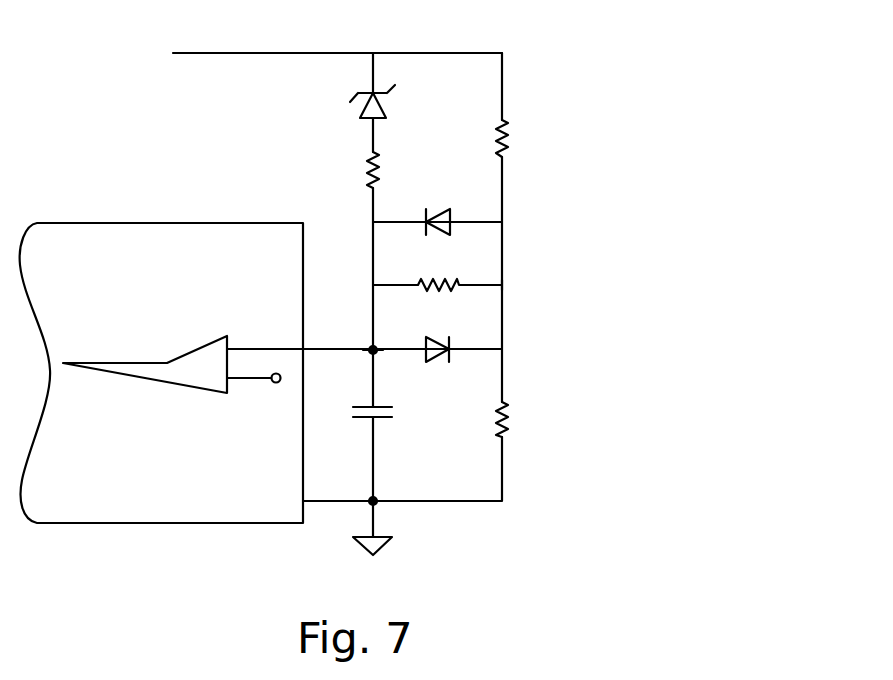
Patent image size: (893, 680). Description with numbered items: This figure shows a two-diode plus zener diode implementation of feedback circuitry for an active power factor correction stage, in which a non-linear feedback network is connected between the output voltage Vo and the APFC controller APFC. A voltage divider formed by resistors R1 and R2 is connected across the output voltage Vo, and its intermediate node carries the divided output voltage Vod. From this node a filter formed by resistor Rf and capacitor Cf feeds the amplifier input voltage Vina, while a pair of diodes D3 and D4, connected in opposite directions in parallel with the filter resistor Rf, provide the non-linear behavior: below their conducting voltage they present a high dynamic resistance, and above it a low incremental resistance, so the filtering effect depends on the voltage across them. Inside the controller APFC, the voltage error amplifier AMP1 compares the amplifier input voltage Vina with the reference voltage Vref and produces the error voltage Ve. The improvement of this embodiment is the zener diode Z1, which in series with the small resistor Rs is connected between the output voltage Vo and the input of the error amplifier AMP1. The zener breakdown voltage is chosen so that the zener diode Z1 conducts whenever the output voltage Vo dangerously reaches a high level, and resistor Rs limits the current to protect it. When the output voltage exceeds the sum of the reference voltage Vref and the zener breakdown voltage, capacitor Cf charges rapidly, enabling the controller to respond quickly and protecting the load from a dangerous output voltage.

The output voltage Vo is at (486, 32).
The zener diode Z1 is at (355, 108).
The resistor Rs is at (353, 172).
The voltage divider resistor R1 is at (480, 141).
The voltage divider resistor R2 is at (480, 420).
The diode D3 is at (437, 203).
The filter resistor Rf is at (437, 266).
The divided output voltage Vod is at (525, 289).
The diode D4 is at (364, 333).
The amplifier input voltage Vina is at (348, 328).
The filter capacitor Cf is at (358, 431).
The APFC controller APFC is at (161, 373).
The voltage error amplifier AMP1 is at (172, 381).
The error voltage Ve is at (109, 344).
The reference voltage Vref is at (264, 403).